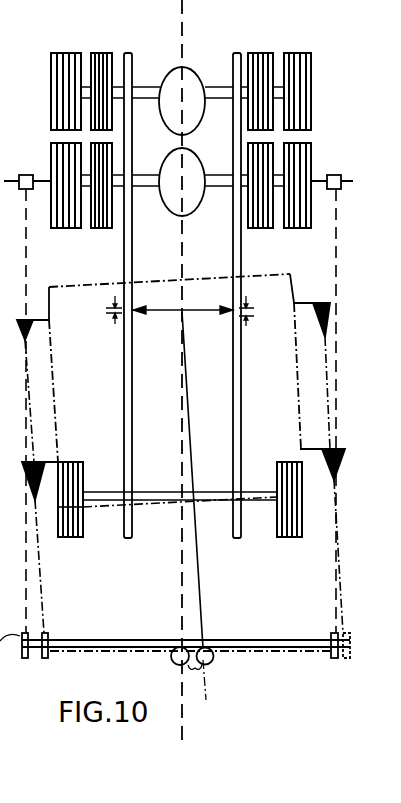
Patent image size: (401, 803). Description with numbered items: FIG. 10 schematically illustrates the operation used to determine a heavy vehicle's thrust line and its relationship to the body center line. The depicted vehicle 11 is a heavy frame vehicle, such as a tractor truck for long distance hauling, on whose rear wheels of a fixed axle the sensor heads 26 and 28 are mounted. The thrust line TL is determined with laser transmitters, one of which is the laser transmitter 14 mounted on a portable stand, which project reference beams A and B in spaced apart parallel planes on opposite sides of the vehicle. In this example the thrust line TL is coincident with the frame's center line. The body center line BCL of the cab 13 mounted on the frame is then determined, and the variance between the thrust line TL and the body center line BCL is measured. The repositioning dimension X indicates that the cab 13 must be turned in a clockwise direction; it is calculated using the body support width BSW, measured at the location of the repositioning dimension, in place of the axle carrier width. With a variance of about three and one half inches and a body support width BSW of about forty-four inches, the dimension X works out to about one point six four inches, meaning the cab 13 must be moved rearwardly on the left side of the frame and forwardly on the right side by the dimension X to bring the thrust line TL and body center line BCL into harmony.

The vehicle 11 is at (350, 112).
The cab 13 is at (78, 287).
The laser transmitter 14 is at (333, 633).
The sensor head 26 is at (31, 174).
The sensor head 28 is at (336, 173).
The reference beam A is at (43, 578).
The reference beam B is at (345, 590).
The repositioning dimension X is at (109, 310).
The body support width BSW is at (165, 312).
The thrust line TL is at (179, 555).
The body center line BCL is at (205, 612).